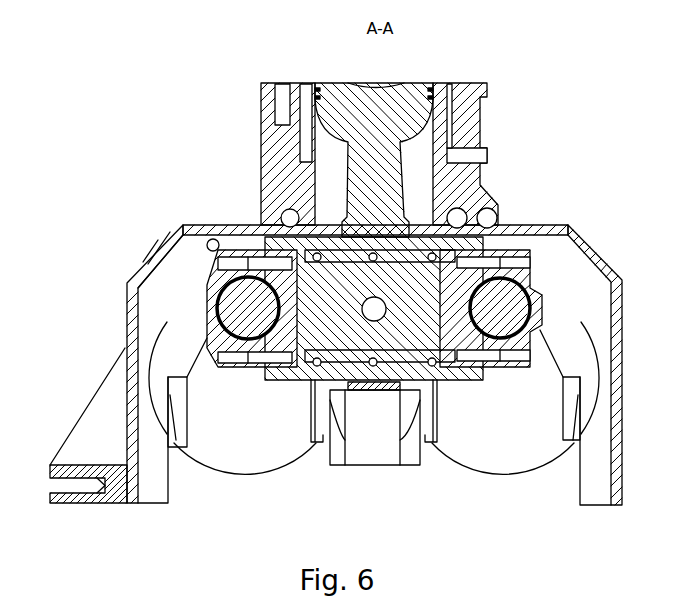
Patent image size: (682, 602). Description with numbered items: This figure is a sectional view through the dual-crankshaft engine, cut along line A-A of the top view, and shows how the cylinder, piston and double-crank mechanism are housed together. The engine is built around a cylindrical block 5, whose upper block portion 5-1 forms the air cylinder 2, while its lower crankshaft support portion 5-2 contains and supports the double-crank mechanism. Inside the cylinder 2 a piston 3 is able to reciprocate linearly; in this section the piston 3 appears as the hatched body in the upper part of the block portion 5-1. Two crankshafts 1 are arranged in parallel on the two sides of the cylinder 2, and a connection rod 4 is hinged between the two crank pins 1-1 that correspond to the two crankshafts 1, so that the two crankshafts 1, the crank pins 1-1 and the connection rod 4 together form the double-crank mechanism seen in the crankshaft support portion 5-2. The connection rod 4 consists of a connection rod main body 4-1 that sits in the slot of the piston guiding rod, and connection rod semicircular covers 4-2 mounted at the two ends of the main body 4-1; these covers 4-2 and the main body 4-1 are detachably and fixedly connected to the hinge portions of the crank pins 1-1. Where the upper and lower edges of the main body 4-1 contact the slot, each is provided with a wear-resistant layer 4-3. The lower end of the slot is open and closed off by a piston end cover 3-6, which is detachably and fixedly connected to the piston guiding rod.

The crankshaft 1 is at (185, 285).
The crank pin 1-1 is at (250, 300).
The air cylinder 2 is at (313, 177).
The piston 3 is at (370, 133).
The piston end cover 3-6 is at (377, 386).
The connection rod 4 is at (293, 362).
The connection rod main body 4-1 is at (325, 320).
The connection rod semicircular cover 4-2 is at (240, 358).
The wear-resistant layer 4-3 is at (365, 380).
The cylindrical block 5 is at (127, 283).
The block portion 5-1 is at (263, 100).
The crankshaft support portion 5-2 is at (185, 285).